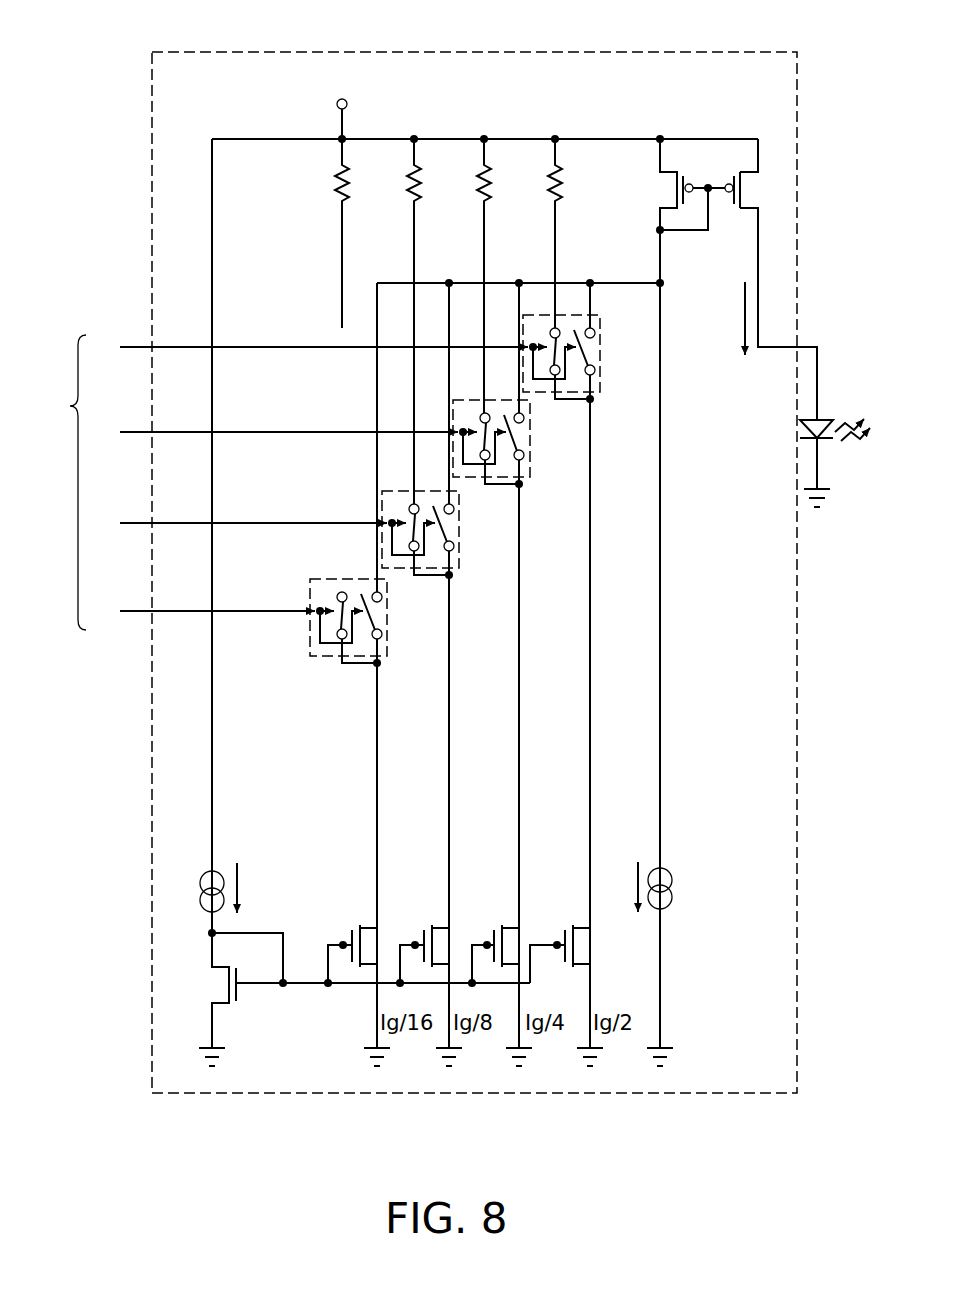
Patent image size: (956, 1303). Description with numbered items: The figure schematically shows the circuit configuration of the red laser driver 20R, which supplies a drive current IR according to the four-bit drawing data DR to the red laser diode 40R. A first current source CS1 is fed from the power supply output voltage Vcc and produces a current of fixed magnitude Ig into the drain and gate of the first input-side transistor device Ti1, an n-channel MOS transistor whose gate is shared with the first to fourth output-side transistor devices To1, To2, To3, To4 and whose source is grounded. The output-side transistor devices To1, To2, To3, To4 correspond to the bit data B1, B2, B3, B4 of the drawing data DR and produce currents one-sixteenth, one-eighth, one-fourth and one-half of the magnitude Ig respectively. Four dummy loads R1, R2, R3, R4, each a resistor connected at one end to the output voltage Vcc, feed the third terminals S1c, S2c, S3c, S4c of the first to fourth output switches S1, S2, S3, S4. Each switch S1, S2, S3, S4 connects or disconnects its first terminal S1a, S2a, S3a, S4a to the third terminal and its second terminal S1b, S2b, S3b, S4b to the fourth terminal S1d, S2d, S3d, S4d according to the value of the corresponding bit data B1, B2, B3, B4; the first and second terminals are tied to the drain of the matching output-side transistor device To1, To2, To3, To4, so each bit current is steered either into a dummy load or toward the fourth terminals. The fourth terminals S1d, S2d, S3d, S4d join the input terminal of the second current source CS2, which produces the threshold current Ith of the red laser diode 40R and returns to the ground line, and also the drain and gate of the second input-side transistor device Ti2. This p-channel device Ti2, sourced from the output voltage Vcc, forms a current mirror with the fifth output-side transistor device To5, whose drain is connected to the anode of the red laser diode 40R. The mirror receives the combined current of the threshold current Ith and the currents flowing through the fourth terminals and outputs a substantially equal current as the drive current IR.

The red laser driver 20R is at (568, 52).
The red laser diode 40R is at (810, 438).
The output voltage Vcc is at (341, 109).
The first dummy load R1 is at (338, 180).
The second dummy load R2 is at (410, 180).
The third dummy load R3 is at (480, 180).
The fourth dummy load R4 is at (551, 180).
The first output switch S1 is at (349, 665).
The second output switch S2 is at (404, 665).
The third output switch S3 is at (439, 665).
The fourth output switch S4 is at (583, 651).
The first terminal S1a is at (337, 636).
The second terminal S1b is at (382, 636).
The third terminal S1c is at (337, 594).
The fourth terminal S1d is at (382, 597).
The first terminal S2a is at (420, 548).
The second terminal S2b is at (454, 546).
The third terminal S2c is at (412, 504).
The fourth terminal S2d is at (454, 509).
The first terminal S3a is at (491, 457).
The second terminal S3b is at (524, 455).
The third terminal S3c is at (484, 412).
The fourth terminal S3d is at (524, 418).
The first terminal S4a is at (561, 372).
The second terminal S4b is at (595, 370).
The third terminal S4c is at (553, 328).
The fourth terminal S4d is at (595, 333).
The first input-side transistor device Ti1 is at (223, 987).
The second input-side transistor device Ti2 is at (676, 190).
The first output-side transistor device To1 is at (352, 930).
The second output-side transistor device To2 is at (424, 930).
The third output-side transistor device To3 is at (494, 930).
The fourth output-side transistor device To4 is at (565, 930).
The fifth output-side transistor device To5 is at (748, 192).
The first current source CS1 is at (203, 874).
The second current source CS2 is at (673, 874).
The first bit or LSB data B1 is at (203, 612).
The second bit data B2 is at (239, 524).
The third bit data B3 is at (275, 433).
The fourth bit or MSB data B4 is at (310, 348).
The drawing data DR is at (61, 482).
The current magnitude Ig is at (252, 888).
The threshold current Ith is at (621, 887).
The drive current IR is at (731, 318).